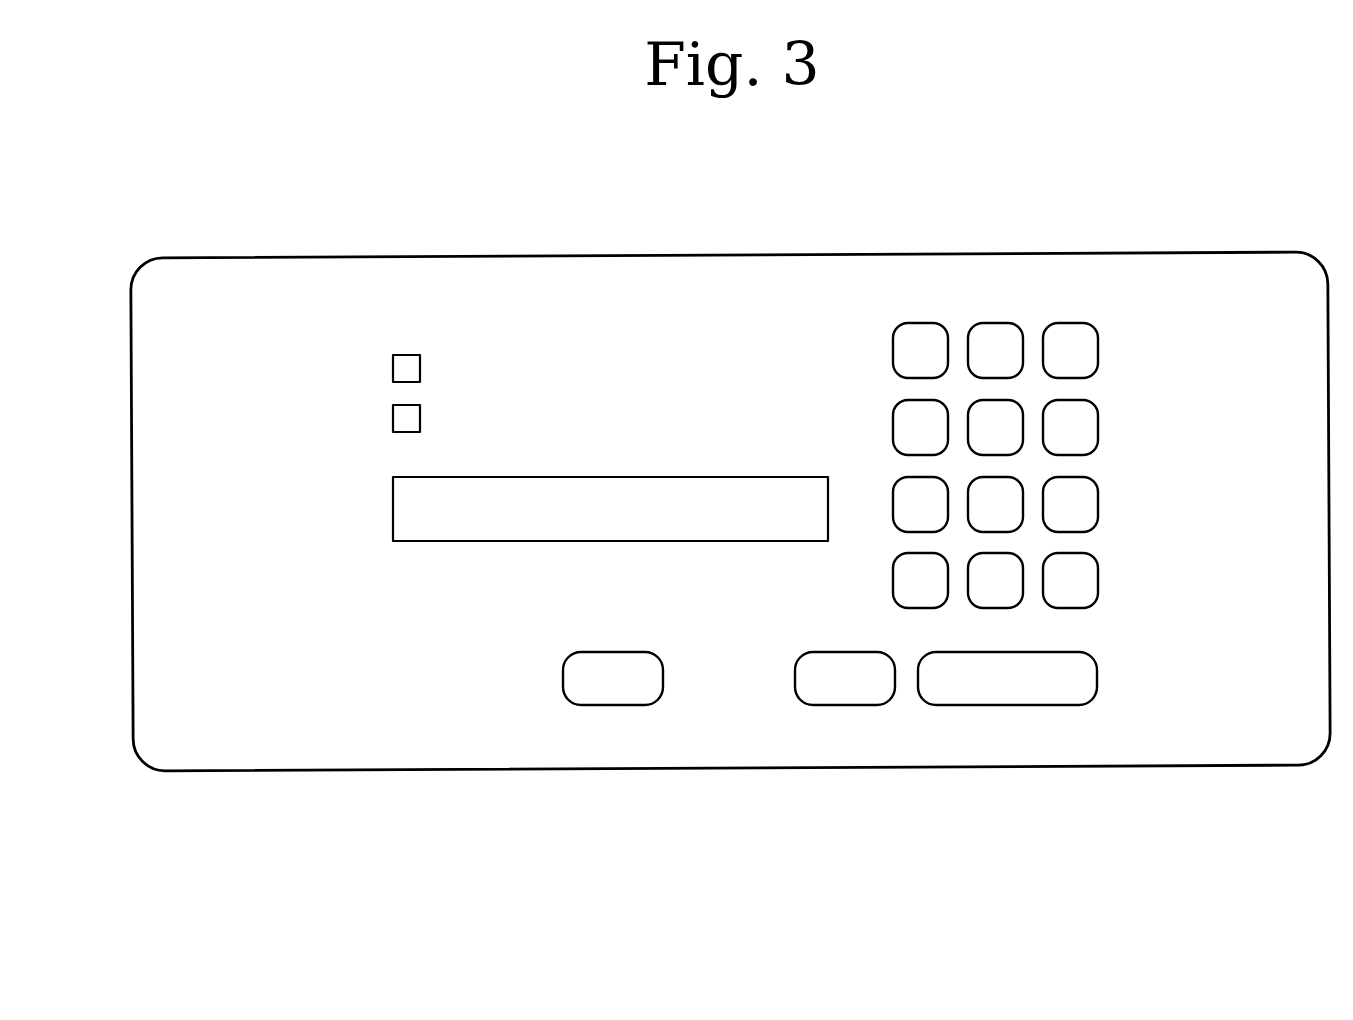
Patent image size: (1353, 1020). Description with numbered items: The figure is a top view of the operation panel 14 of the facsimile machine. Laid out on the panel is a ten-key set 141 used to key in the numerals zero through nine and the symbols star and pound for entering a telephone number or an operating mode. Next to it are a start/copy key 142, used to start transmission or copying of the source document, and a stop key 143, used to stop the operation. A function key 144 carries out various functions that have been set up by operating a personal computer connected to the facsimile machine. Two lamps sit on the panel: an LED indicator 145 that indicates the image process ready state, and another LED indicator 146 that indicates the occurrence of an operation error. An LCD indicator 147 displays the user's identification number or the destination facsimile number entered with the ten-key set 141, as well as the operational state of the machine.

The operation panel 14 is at (936, 274).
The ten-key set 141 is at (1110, 333).
The start/copy key 142 is at (990, 703).
The stop key 143 is at (850, 703).
The function key 144 is at (612, 695).
The LED indicator 145 is at (405, 354).
The LED indicator 146 is at (393, 415).
The LCD indicator 147 is at (553, 482).